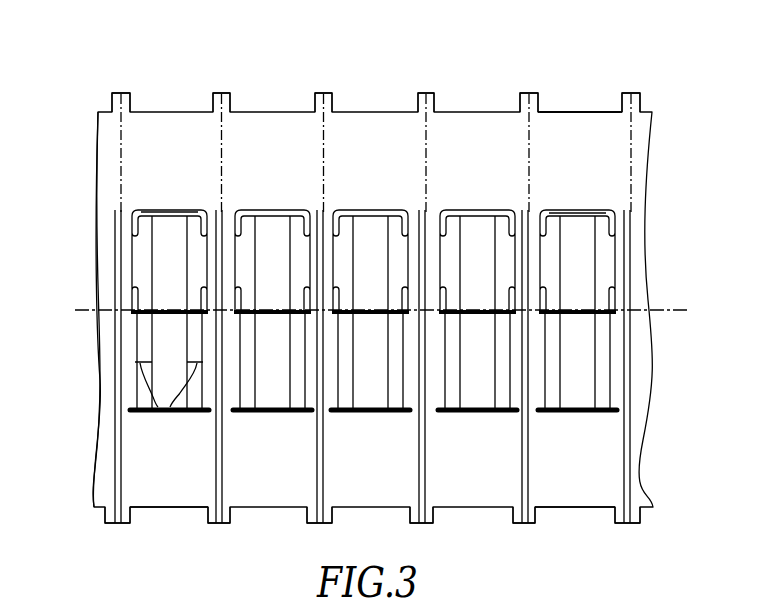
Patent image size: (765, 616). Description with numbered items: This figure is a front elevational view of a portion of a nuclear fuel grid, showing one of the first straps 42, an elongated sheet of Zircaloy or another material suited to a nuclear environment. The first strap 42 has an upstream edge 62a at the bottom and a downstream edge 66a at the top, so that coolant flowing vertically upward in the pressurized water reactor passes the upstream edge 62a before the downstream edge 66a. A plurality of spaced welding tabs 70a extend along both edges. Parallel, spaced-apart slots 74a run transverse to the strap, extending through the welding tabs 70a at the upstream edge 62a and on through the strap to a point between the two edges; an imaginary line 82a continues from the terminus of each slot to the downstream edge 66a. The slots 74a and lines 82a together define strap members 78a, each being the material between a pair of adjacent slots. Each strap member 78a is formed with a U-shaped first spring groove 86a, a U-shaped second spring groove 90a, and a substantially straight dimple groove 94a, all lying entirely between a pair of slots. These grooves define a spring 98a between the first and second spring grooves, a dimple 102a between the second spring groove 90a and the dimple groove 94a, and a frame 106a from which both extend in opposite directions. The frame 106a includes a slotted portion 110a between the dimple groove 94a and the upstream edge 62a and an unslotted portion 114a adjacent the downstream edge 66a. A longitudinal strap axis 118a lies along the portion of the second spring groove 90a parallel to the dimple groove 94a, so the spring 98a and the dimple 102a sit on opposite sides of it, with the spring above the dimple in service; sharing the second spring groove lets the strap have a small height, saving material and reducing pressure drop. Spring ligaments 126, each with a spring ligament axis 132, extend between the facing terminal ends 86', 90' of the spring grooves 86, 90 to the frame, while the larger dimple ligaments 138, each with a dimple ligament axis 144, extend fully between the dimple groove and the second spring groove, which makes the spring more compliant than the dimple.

The first strap 42 is at (486, 99).
The upstream edge 62a is at (178, 509).
The downstream edge 66a is at (143, 110).
The welding tab 70a is at (108, 96).
The slot 74a is at (115, 524).
The strap member 78a is at (167, 100).
The imaginary line 82a is at (118, 126).
The first spring groove 86 is at (218, 312).
The terminal end of first spring groove 86' is at (471, 311).
The first spring groove 86a is at (597, 197).
The second spring groove 90 is at (341, 312).
The terminal end of second spring groove 90' is at (477, 312).
The second spring groove 90a is at (579, 329).
The dimple groove 94a is at (590, 413).
The spring 98a is at (565, 197).
The dimple 102a is at (564, 427).
The frame 106a is at (550, 99).
The slotted portion 110a is at (578, 508).
The unslotted portion 114a is at (578, 112).
The strap axis 118a is at (680, 311).
The spring ligament 126 is at (198, 276).
The spring ligament axis 132 is at (195, 213).
The dimple ligament 138 is at (196, 345).
The dimple ligament axis 144 is at (170, 398).